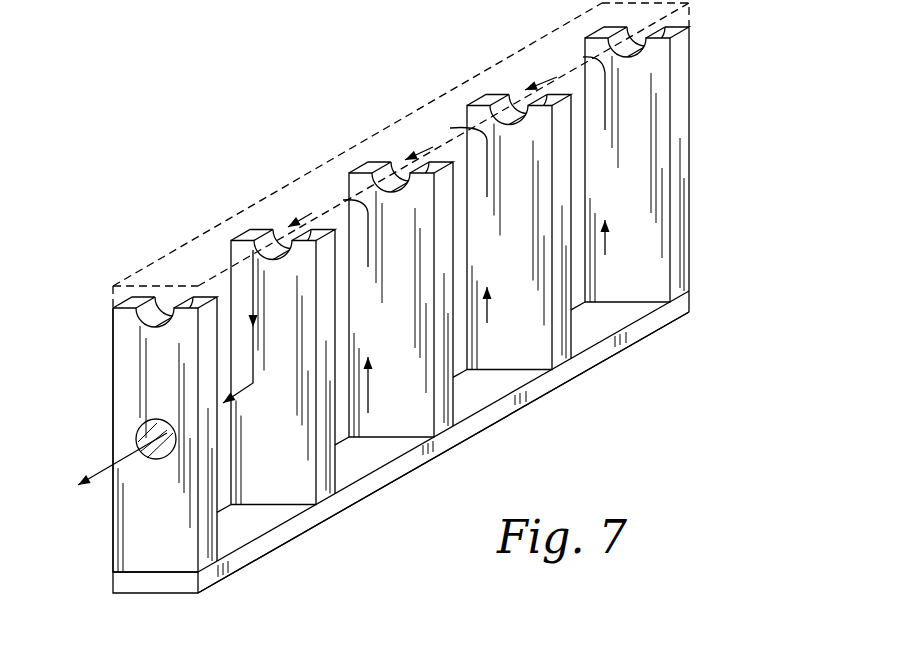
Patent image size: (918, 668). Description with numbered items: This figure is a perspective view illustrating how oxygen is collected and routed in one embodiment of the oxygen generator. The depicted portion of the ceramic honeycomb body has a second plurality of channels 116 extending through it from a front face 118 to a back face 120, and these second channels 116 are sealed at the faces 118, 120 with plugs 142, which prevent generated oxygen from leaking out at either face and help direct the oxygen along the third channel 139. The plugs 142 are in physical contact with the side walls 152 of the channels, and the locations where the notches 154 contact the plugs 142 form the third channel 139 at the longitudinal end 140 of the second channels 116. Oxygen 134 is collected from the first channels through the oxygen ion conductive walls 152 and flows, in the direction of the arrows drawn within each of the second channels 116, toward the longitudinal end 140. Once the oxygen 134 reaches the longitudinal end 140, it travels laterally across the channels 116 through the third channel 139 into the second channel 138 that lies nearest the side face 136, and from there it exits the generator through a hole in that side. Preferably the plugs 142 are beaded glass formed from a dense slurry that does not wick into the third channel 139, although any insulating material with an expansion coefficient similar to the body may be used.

The second plurality of channels 116 is at (395, 417).
The front face 118 is at (535, 48).
The back face 120 is at (592, 372).
The oxygen 134 is at (102, 473).
The side face 136 is at (148, 505).
The second channel 138 is at (140, 426).
The third channel 139 is at (327, 197).
The longitudinal end 140 is at (166, 256).
The plugs 142 is at (268, 196).
The side walls 152 is at (294, 414).
The notches 154 is at (510, 98).